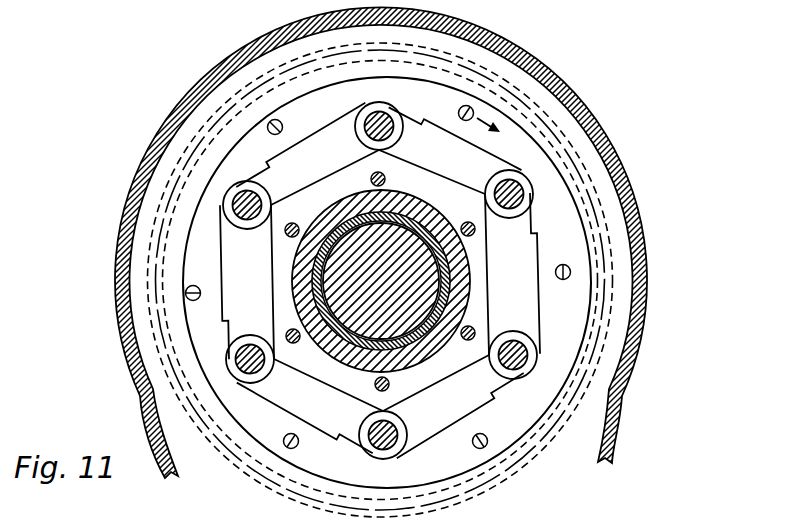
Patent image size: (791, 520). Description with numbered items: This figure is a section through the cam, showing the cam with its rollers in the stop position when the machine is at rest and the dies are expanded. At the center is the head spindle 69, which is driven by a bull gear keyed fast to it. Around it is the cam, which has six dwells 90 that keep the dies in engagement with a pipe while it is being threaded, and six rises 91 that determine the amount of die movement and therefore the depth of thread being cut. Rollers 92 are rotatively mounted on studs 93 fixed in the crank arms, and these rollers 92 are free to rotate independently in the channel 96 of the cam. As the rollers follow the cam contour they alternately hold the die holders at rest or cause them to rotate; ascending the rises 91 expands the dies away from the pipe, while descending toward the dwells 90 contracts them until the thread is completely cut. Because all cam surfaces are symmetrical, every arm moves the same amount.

The head spindle 69 is at (432, 207).
The dwells 90 is at (515, 270).
The rises 91 is at (334, 135).
The rollers 92 is at (527, 190).
The studs 93 is at (522, 358).
The channel of the cam 96 is at (235, 283).